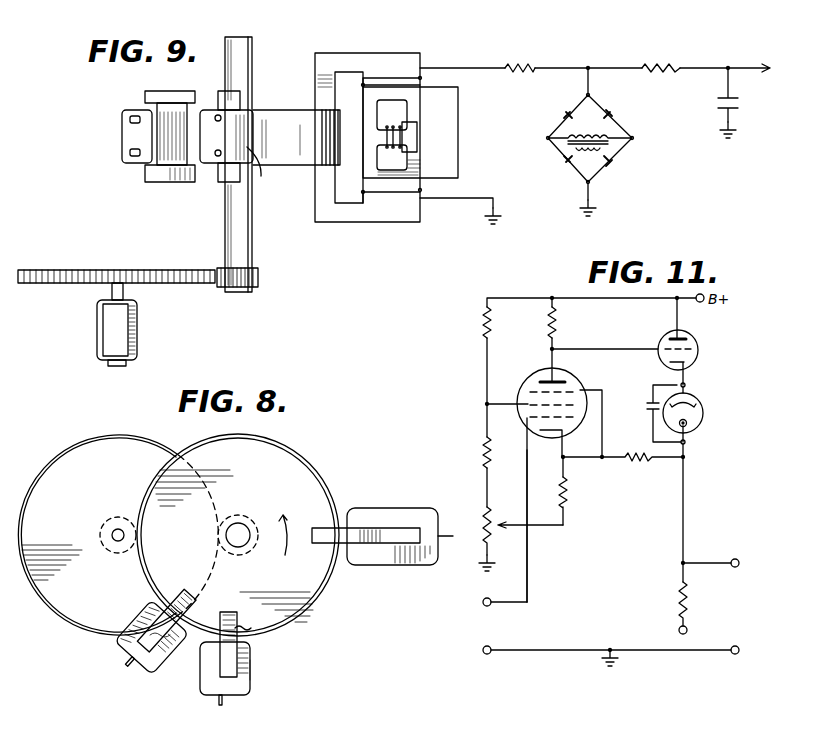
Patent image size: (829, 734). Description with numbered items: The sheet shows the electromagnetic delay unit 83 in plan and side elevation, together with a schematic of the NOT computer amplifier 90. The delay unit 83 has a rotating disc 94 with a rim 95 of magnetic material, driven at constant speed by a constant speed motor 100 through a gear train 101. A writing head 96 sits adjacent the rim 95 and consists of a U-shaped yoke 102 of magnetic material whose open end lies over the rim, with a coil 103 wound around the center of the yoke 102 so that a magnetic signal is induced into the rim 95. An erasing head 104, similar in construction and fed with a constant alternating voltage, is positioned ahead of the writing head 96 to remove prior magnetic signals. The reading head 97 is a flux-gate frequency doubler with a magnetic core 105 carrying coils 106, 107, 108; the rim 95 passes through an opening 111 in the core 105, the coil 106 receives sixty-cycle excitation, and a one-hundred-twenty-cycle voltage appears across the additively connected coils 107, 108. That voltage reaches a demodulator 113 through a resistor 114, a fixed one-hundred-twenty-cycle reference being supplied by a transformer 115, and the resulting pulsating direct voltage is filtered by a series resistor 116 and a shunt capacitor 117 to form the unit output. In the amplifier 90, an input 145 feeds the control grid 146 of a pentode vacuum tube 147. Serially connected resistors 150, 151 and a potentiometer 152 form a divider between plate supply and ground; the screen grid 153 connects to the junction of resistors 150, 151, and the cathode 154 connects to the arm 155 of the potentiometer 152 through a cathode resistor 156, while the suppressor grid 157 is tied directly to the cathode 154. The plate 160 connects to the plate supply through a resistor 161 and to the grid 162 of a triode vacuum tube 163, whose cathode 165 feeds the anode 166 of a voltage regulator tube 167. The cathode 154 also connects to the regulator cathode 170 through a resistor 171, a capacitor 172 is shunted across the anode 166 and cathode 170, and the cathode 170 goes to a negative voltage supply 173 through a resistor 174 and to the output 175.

In FIG. 9, the delay unit 83 is at (287, 231).
In FIG. 8, the delay unit 83 is at (251, 544).
In FIG. 11, the amplifier 90 is at (715, 404).
In FIG. 8, the rotating disc 94 is at (305, 595).
In FIG. 9, the rim 95 is at (298, 155).
In FIG. 8, the rim 95 is at (333, 575).
In FIG. 9, the writing head 96 is at (261, 170).
In FIG. 8, the writing head 96 is at (260, 686).
In FIG. 9, the reading head 97 is at (371, 141).
In FIG. 8, the reading head 97 is at (394, 503).
In FIG. 9, the constant speed motor 100 is at (103, 328).
In FIG. 8, the constant speed motor 100 is at (132, 513).
In FIG. 9, the gear train 101 is at (214, 257).
In FIG. 8, the gear train 101 is at (118, 523).
In FIG. 9, the U-shaped yoke 102 is at (220, 175).
In FIG. 8, the U-shaped yoke 102 is at (240, 627).
In FIG. 9, the coil 103 is at (208, 117).
In FIG. 8, the coil 103 is at (202, 682).
In FIG. 9, the erasing head 104 is at (114, 154).
In FIG. 8, the erasing head 104 is at (127, 647).
In FIG. 9, the magnetic core 105 is at (343, 60).
In FIG. 9, the coil 106 is at (412, 122).
In FIG. 9, the coil 107 is at (393, 200).
In FIG. 9, the coil 108 is at (398, 77).
In FIG. 9, the opening 111 is at (320, 112).
In FIG. 9, the demodulator 113 is at (612, 142).
In FIG. 9, the resistor 114 is at (522, 68).
In FIG. 9, the transformer 115 is at (617, 137).
In FIG. 9, the series resistor 116 is at (660, 68).
In FIG. 9, the shunt capacitor 117 is at (735, 105).
In FIG. 11, the input 145 is at (490, 606).
In FIG. 11, the control grid 146 is at (527, 462).
In FIG. 11, the pentode vacuum tube 147 is at (552, 474).
In FIG. 11, the resistor 150 is at (487, 322).
In FIG. 11, the resistor 151 is at (487, 452).
In FIG. 11, the potentiometer 152 is at (487, 525).
In FIG. 11, the screen grid 153 is at (513, 404).
In FIG. 11, the cathode 154 is at (563, 458).
In FIG. 11, the arm 155 is at (499, 524).
In FIG. 11, the cathode resistor 156 is at (567, 503).
In FIG. 11, the suppressor grid 157 is at (602, 400).
In FIG. 11, the plate 160 is at (552, 380).
In FIG. 11, the resistor 161 is at (552, 322).
In FIG. 11, the grid 162 is at (690, 338).
In FIG. 11, the triode vacuum tube 163 is at (644, 341).
In FIG. 11, the cathode 165 is at (690, 364).
In FIG. 11, the anode 166 is at (702, 413).
In FIG. 11, the voltage regulator tube 167 is at (703, 413).
In FIG. 11, the cathode 170 is at (687, 425).
In FIG. 11, the resistor 171 is at (632, 457).
In FIG. 11, the capacitor 172 is at (652, 411).
In FIG. 11, the negative voltage supply 173 is at (687, 628).
In FIG. 11, the resistor 174 is at (679, 597).
In FIG. 11, the output 175 is at (745, 551).